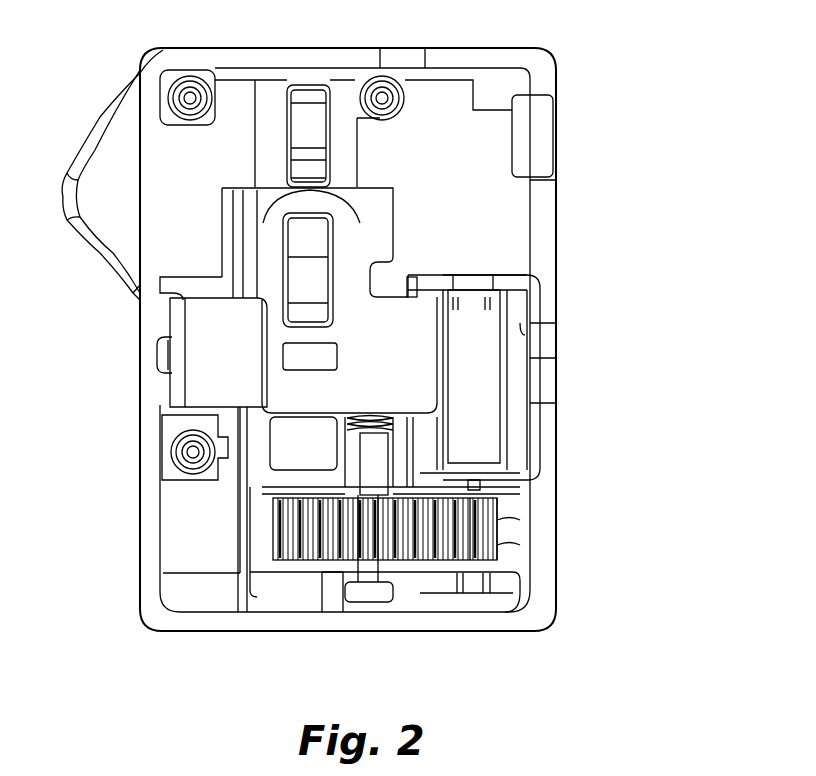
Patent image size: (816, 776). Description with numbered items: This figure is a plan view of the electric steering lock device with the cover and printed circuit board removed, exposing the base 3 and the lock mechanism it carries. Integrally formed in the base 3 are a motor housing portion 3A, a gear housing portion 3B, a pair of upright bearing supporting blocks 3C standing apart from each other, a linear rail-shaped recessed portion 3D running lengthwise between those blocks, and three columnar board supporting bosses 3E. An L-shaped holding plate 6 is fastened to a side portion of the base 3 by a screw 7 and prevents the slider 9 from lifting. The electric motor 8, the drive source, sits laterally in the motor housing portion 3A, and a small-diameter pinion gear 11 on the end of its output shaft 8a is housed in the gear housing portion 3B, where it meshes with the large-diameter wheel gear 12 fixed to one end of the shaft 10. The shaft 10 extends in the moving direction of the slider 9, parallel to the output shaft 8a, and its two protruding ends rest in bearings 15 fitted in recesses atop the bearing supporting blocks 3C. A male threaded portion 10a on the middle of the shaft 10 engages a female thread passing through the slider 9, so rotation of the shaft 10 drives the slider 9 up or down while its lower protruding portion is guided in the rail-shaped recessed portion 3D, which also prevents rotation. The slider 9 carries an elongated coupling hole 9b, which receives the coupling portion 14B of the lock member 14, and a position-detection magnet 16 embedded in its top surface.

The base 3 is at (556, 185).
The motor housing portion 3A is at (520, 323).
The gear housing portion 3B is at (510, 562).
The bearing supporting blocks 3C is at (403, 280).
The rail-shaped recessed portion 3D is at (380, 468).
The board supporting bosses 3E is at (180, 75).
The holding plate 6 is at (203, 323).
The screw 7 is at (157, 353).
The electric motor 8 is at (522, 362).
The output shaft 8a is at (480, 485).
The slider 9 is at (412, 313).
The coupling hole 9b is at (330, 228).
The shaft 10 is at (365, 455).
The male threaded portion 10a is at (380, 415).
The pinion gear 11 is at (500, 532).
The wheel gear 12 is at (282, 562).
The lock member 14 is at (307, 148).
The coupling portion 14B is at (303, 238).
The bearings 15 is at (385, 278).
The magnet 16 is at (322, 360).